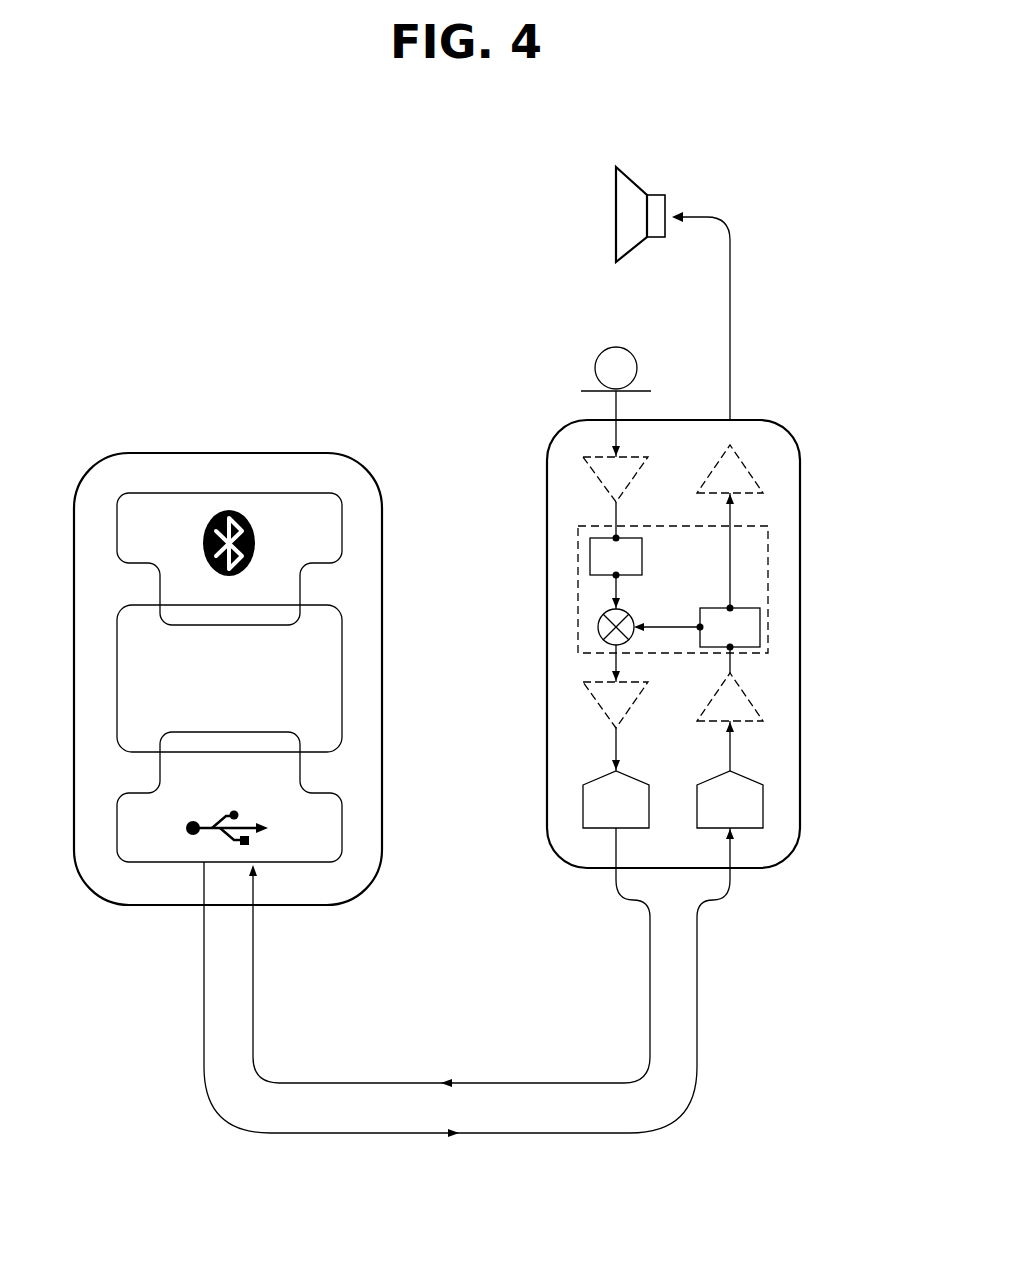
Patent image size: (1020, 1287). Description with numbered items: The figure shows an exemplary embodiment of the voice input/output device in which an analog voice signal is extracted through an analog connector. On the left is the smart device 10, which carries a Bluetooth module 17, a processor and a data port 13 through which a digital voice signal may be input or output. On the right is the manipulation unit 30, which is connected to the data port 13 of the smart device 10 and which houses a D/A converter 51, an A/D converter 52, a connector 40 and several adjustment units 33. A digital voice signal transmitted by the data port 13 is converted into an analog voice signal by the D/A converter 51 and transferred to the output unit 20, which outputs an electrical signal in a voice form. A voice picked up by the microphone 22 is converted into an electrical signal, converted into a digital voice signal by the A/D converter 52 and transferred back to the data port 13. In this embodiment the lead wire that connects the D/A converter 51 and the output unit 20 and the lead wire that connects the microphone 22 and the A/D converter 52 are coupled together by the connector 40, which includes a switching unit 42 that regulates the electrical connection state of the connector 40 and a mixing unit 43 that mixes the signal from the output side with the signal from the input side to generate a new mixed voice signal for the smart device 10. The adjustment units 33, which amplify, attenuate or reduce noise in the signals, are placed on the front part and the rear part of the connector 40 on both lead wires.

The smart device 10 is at (226, 468).
The data port 13 is at (178, 845).
The Bluetooth module 17 is at (325, 508).
The output unit 20 is at (614, 208).
The microphone 22 is at (607, 357).
The manipulation unit 30 is at (768, 420).
The adjustment unit 33 is at (597, 480).
The connector 40 is at (768, 582).
The switching unit 42 is at (590, 557).
The mixing unit 43 is at (598, 628).
The D/A converter 51 is at (763, 806).
The A/D converter 52 is at (583, 808).